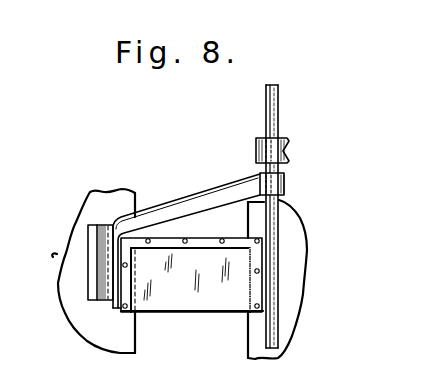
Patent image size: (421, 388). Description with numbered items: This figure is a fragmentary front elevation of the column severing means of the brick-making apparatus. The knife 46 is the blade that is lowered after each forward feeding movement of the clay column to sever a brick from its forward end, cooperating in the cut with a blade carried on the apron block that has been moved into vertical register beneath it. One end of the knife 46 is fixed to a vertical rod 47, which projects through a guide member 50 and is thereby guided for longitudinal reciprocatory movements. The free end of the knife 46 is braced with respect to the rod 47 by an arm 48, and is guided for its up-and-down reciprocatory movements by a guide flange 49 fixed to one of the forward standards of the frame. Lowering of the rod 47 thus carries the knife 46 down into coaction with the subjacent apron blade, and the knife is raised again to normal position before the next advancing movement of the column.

The knife 46 is at (192, 275).
The vertical rod 47 is at (270, 267).
The arm 48 is at (183, 207).
The guide flange 49 is at (107, 264).
The guide member 50 is at (288, 141).